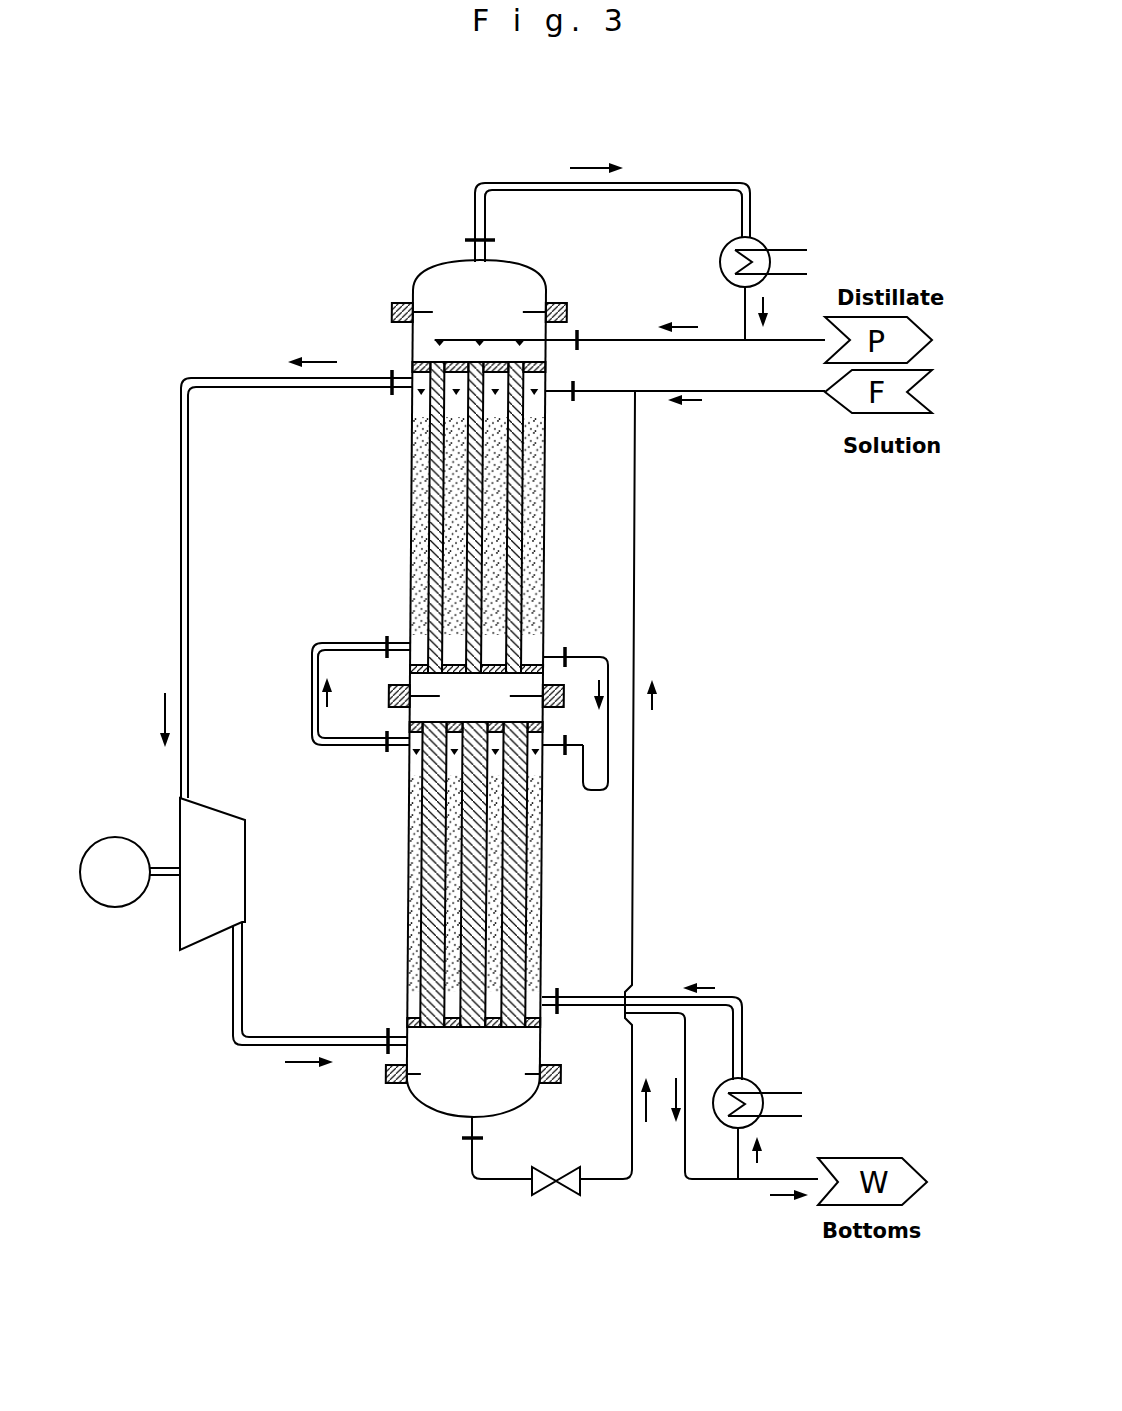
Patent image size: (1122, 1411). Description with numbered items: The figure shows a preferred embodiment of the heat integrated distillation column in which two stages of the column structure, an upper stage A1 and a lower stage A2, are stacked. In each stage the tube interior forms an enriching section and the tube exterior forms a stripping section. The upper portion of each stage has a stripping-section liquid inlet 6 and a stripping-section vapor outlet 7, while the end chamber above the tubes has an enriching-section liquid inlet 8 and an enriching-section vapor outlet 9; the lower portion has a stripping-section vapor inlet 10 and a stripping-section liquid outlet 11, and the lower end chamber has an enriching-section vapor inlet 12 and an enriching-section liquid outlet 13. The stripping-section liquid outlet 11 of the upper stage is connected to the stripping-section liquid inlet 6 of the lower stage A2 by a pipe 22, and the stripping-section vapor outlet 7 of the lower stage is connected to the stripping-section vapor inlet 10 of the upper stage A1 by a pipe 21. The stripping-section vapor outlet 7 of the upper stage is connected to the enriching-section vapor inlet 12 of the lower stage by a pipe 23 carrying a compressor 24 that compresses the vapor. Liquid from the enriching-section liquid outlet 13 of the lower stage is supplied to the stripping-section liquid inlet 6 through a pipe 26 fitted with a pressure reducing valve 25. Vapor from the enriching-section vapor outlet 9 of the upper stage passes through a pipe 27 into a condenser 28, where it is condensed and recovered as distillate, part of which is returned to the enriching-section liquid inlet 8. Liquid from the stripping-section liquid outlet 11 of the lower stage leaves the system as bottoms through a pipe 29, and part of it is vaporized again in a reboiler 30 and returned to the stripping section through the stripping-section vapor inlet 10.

The stripping-section liquid inlet 6 is at (557, 395).
The stripping-section vapor outlet 7 is at (405, 390).
The enriching-section liquid inlet 8 is at (563, 338).
The enriching-section vapor outlet 9 is at (472, 260).
The stripping-section vapor inlet 10 is at (400, 642).
The stripping-section liquid outlet 11 is at (550, 650).
The enriching-section vapor inlet 12 is at (395, 1035).
The enriching-section liquid outlet 13 is at (465, 1125).
The pipe 21 is at (312, 705).
The pipe 22 is at (588, 655).
The pipe 23 is at (180, 585).
The compressor 24 is at (177, 920).
The pressure reducing valve 25 is at (568, 1197).
The pipe 26 is at (636, 848).
The pipe 27 is at (578, 192).
The condenser 28 is at (720, 264).
The pipe 29 is at (683, 1160).
The reboiler 30 is at (752, 1082).
The structure constituting the column (upper stage) A1 is at (372, 518).
The structure constituting the column (lower stage) A2 is at (374, 884).